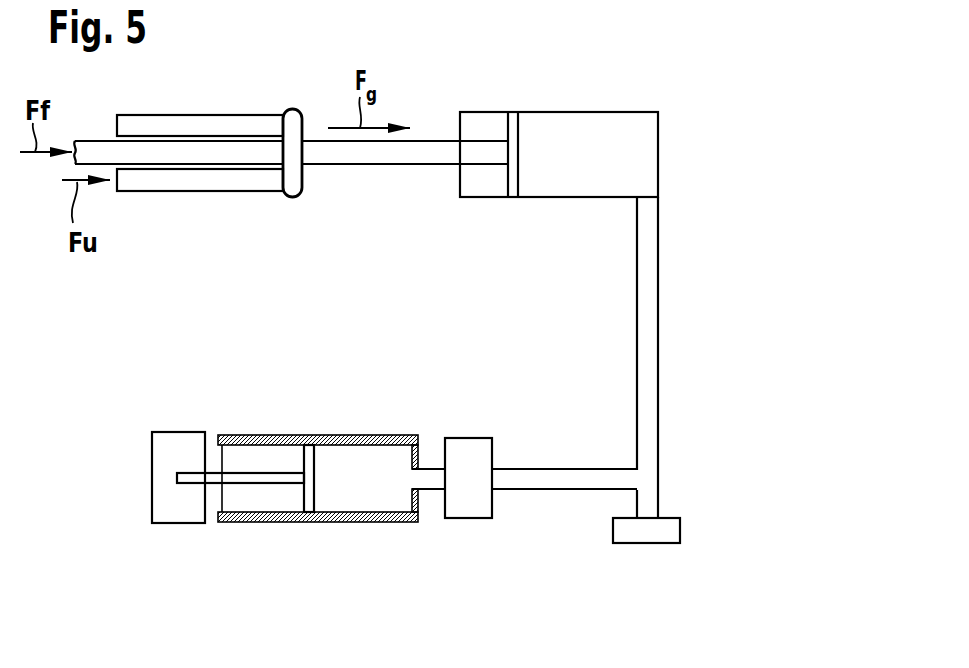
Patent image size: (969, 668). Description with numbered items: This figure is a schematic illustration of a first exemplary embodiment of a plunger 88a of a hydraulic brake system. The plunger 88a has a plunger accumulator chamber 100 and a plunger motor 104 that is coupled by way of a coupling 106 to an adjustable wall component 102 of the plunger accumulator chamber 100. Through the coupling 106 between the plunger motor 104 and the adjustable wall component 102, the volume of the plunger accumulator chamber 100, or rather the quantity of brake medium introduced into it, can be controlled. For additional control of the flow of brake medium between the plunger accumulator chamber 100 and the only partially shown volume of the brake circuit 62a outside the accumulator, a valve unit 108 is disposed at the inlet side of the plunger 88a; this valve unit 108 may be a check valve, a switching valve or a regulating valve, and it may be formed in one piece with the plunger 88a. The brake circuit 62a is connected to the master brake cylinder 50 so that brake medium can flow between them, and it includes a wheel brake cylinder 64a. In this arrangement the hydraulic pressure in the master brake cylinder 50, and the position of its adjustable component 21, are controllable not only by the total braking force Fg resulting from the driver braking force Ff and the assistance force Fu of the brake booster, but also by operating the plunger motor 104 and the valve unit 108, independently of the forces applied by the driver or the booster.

The adjustable component 21 is at (517, 123).
The master brake cylinder 50 is at (633, 155).
The brake circuit 62a is at (683, 332).
The wheel brake cylinder 64a is at (670, 532).
The plunger 88a is at (322, 527).
The plunger accumulator chamber 100 is at (363, 465).
The adjustable wall component 102 is at (308, 452).
The plunger motor 104 is at (160, 448).
The coupling 106 is at (257, 478).
The valve unit 108 is at (468, 450).